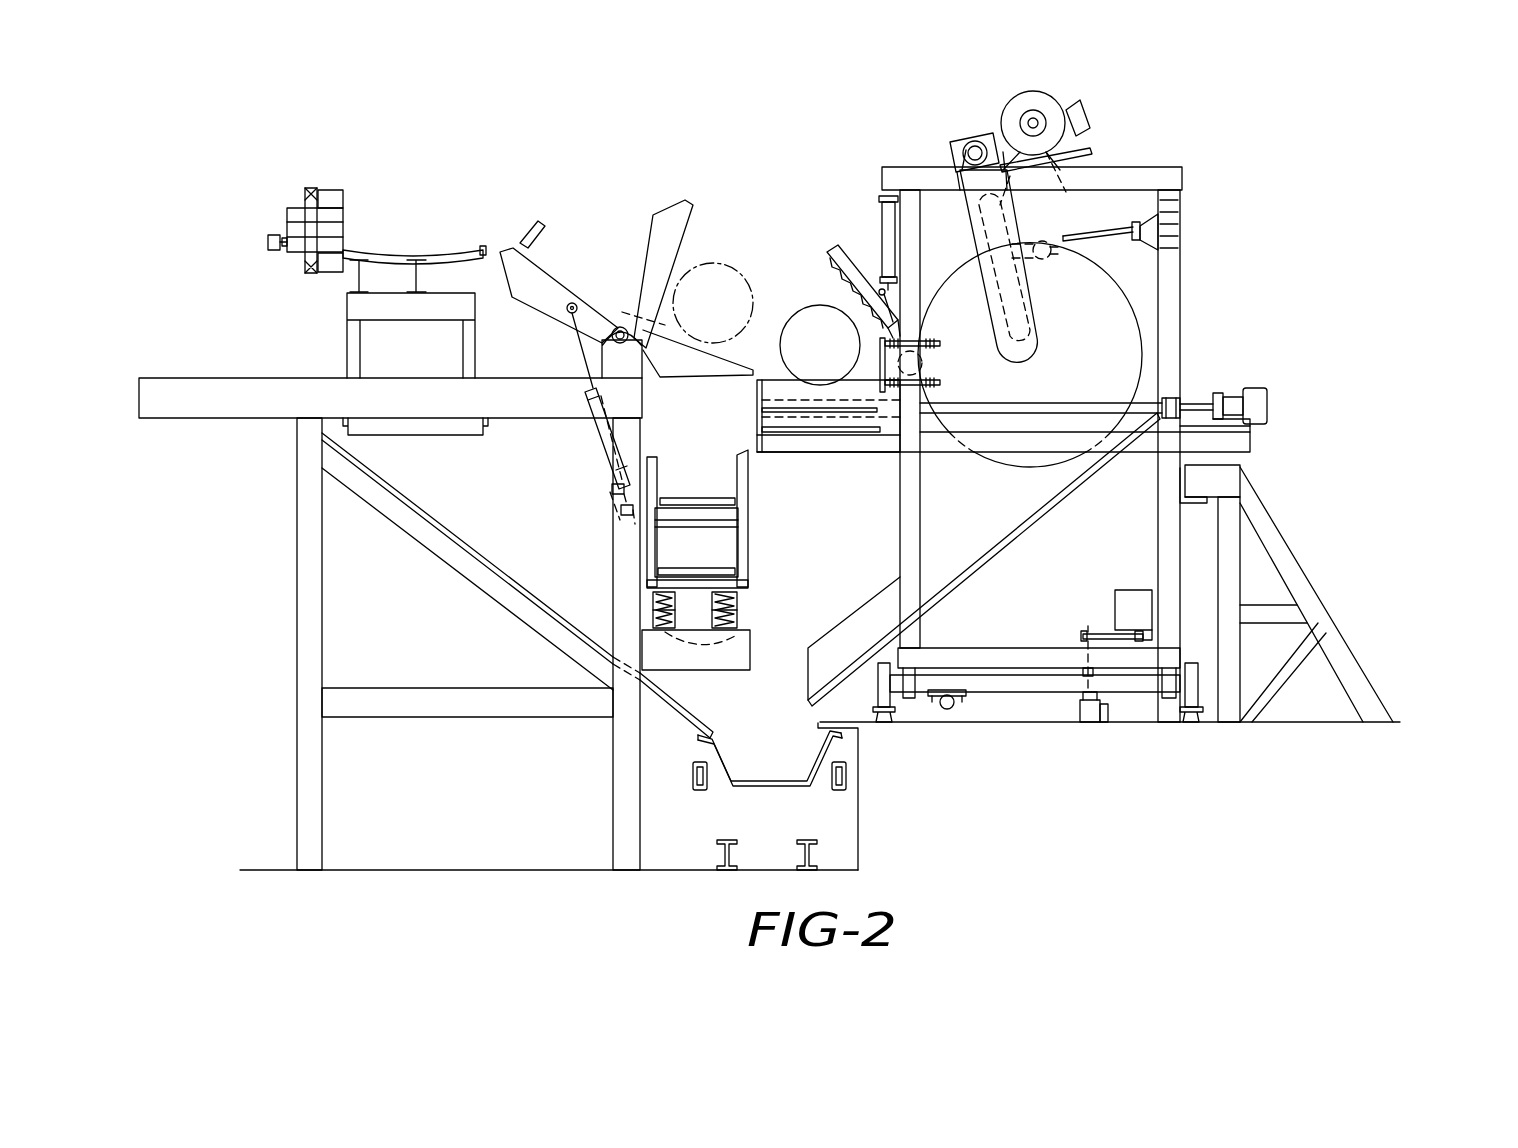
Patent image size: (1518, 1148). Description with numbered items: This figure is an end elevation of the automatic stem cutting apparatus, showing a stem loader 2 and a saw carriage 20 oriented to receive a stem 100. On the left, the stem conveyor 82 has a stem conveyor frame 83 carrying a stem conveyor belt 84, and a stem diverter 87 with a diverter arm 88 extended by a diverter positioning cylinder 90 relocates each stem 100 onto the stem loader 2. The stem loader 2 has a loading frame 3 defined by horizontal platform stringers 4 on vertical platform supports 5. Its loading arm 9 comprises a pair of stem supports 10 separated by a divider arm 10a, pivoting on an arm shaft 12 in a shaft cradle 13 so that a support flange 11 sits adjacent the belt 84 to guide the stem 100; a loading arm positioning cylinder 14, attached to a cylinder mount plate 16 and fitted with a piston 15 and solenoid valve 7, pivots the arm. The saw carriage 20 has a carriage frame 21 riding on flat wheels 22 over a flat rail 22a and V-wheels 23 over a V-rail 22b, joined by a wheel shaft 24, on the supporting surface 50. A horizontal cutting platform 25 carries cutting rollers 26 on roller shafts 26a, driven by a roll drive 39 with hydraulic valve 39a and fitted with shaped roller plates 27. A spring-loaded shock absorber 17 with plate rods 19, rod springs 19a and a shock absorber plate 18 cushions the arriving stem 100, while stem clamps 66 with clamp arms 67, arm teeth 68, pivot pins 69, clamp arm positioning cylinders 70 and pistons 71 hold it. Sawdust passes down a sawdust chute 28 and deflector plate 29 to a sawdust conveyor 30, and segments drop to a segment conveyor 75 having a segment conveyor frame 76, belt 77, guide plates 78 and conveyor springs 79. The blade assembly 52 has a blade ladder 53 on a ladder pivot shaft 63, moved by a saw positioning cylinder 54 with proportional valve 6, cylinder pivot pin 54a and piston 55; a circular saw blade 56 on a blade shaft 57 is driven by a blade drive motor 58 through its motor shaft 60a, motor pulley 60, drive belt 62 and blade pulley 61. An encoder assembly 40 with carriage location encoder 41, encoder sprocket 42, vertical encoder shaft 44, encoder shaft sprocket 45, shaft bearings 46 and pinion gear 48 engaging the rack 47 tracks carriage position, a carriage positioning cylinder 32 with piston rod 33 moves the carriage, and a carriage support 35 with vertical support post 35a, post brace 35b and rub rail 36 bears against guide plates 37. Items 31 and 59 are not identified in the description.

The stem loader 2 is at (296, 520).
The loading frame 3 is at (296, 580).
The horizontal platform stringers 4 is at (235, 378).
The vertical platform supports 5 is at (297, 654).
The proportional valve 6 is at (1067, 237).
The solenoid valve 7 is at (597, 430).
The loading arm 9 is at (688, 269).
The stem supports 10 is at (548, 272).
The divider arm 10a is at (655, 250).
The support flange 11 is at (528, 238).
The arm shaft 12 is at (617, 327).
The shaft cradle 13 is at (651, 366).
The loading arm positioning cylinder 14 is at (600, 450).
The loading arm positioning cylinder piston 15 is at (582, 336).
The cylinder mount plate 16 is at (613, 516).
The spring-loaded shock absorber 17 is at (878, 376).
The shock absorber plate 18 is at (900, 380).
The plate rods 19 is at (940, 347).
The rod springs 19a is at (936, 344).
The saw carriage 20 is at (1200, 226).
The carriage frame 21 is at (900, 491).
The flat wheels 22 is at (878, 666).
The flat rail 22a is at (877, 712).
The V-rail 22b is at (1190, 719).
The V-wheels 23 is at (1242, 689).
The wheel shaft 24 is at (965, 678).
The horizontal cutting platform 25 is at (878, 453).
The cutting rollers 26 is at (757, 421).
The roller shaft 26a is at (1040, 410).
The shaped roller plates 27 is at (801, 432).
The sawdust chute 28 is at (524, 584).
The sawdust deflector plate 29 is at (692, 710).
The sawdust conveyor 30 is at (722, 745).
The trough brackets 31 is at (696, 772).
The carriage positioning cylinder 32 is at (938, 705).
The carriage positioning cylinder piston rod 33 is at (951, 710).
The carriage support 35 is at (1312, 583).
The vertical support post 35a is at (1280, 701).
The post brace 35b is at (1328, 623).
The rub rail 36 is at (1232, 479).
The guide plates 37 is at (1182, 486).
The roll drive 39 is at (1266, 388).
The hydraulic valve 39a is at (1245, 403).
The encoder assembly 40 is at (1093, 623).
The carriage location encoder 41 is at (1121, 621).
The encoder sprocket 42 is at (1152, 641).
The vertical encoder shaft 44 is at (1080, 695).
The encoder shaft sprocket 45 is at (1082, 637).
The shaft bearings 46 is at (1085, 673).
The rack 47 is at (1106, 722).
The pinion gear 48 is at (1089, 722).
The supporting surface 50 is at (1000, 724).
The blade assembly 52 is at (928, 159).
The blade ladder 53 is at (1030, 311).
The saw positioning cylinder 54 is at (1132, 229).
The cylinder pivot pin 54a is at (1142, 239).
The saw positioning cylinder piston 55 is at (1046, 255).
The circular saw blade 56 is at (1072, 370).
The blade shaft 57 is at (1022, 341).
The blade drive motor 58 is at (1030, 106).
The plate 59 is at (1085, 151).
The motor pulley 60 is at (1008, 118).
The motor shaft 60a is at (1060, 138).
The blade pulley 61 is at (961, 246).
The drive belt 62 is at (1060, 199).
The ladder pivot shaft 63 is at (960, 160).
The stem clamps 66 is at (838, 244).
The clamp arm 67 is at (830, 253).
The arm teeth 68 is at (833, 267).
The clamp arm pivot pin 69 is at (915, 351).
The clamp arm positioning cylinder 70 is at (882, 209).
The clamp arm positioning cylinder piston 71 is at (915, 283).
The segment conveyor 75 is at (750, 576).
The segment conveyor frame 76 is at (748, 541).
The segment conveyor belt 77 is at (665, 498).
The segment guide plates 78 is at (738, 457).
The conveyor springs 79 is at (738, 629).
The stem conveyor 82 is at (484, 244).
The stem conveyor frame 83 is at (347, 300).
The stem conveyor belt 84 is at (432, 250).
The stem diverters 87 is at (288, 206).
The diverter arm 88 is at (345, 216).
The diverter positioning cylinder 90 is at (268, 242).
The stem 100 is at (776, 355).